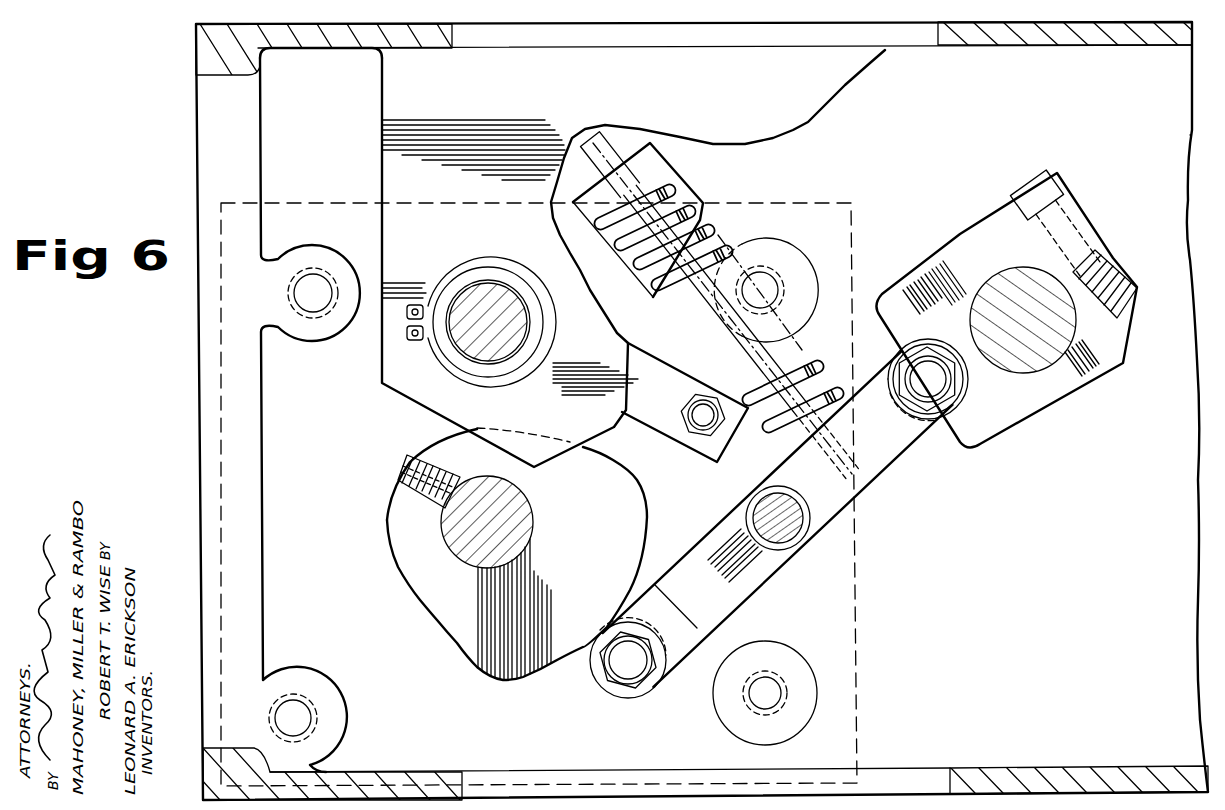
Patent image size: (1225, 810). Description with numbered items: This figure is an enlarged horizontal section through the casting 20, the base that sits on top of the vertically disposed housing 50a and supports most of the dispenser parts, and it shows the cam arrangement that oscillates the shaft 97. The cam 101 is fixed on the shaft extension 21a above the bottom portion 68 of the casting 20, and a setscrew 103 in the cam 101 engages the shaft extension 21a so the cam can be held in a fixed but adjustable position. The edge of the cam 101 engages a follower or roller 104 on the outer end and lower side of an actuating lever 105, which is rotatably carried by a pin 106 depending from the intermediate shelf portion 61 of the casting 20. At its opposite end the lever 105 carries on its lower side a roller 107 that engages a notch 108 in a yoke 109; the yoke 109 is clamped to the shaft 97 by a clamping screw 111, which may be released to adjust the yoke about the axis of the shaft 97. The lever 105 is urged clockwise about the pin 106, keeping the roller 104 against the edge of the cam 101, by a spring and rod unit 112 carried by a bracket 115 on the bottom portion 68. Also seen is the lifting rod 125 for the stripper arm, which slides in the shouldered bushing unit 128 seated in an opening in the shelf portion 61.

The casting 20 is at (198, 482).
The housing 50a is at (220, 455).
The intermediate shelf portion 61 is at (412, 392).
The bottom portion 68 is at (1034, 677).
The shaft 97 is at (1018, 276).
The cam 101 is at (608, 557).
The setscrew 103 is at (398, 477).
The follower or roller 104 is at (617, 695).
The actuating lever 105 is at (770, 580).
The pin 106 is at (787, 535).
The roller 107 is at (965, 385).
The notch 108 is at (942, 345).
The yoke 109 is at (1052, 398).
The clamping screw 111 is at (1058, 180).
The spring and rod unit 112 is at (690, 200).
The bracket 115 is at (660, 151).
The push rod or lifting rod 125 is at (500, 293).
The shouldered bushing unit 128 is at (518, 368).
The shaft extension 21a is at (447, 542).